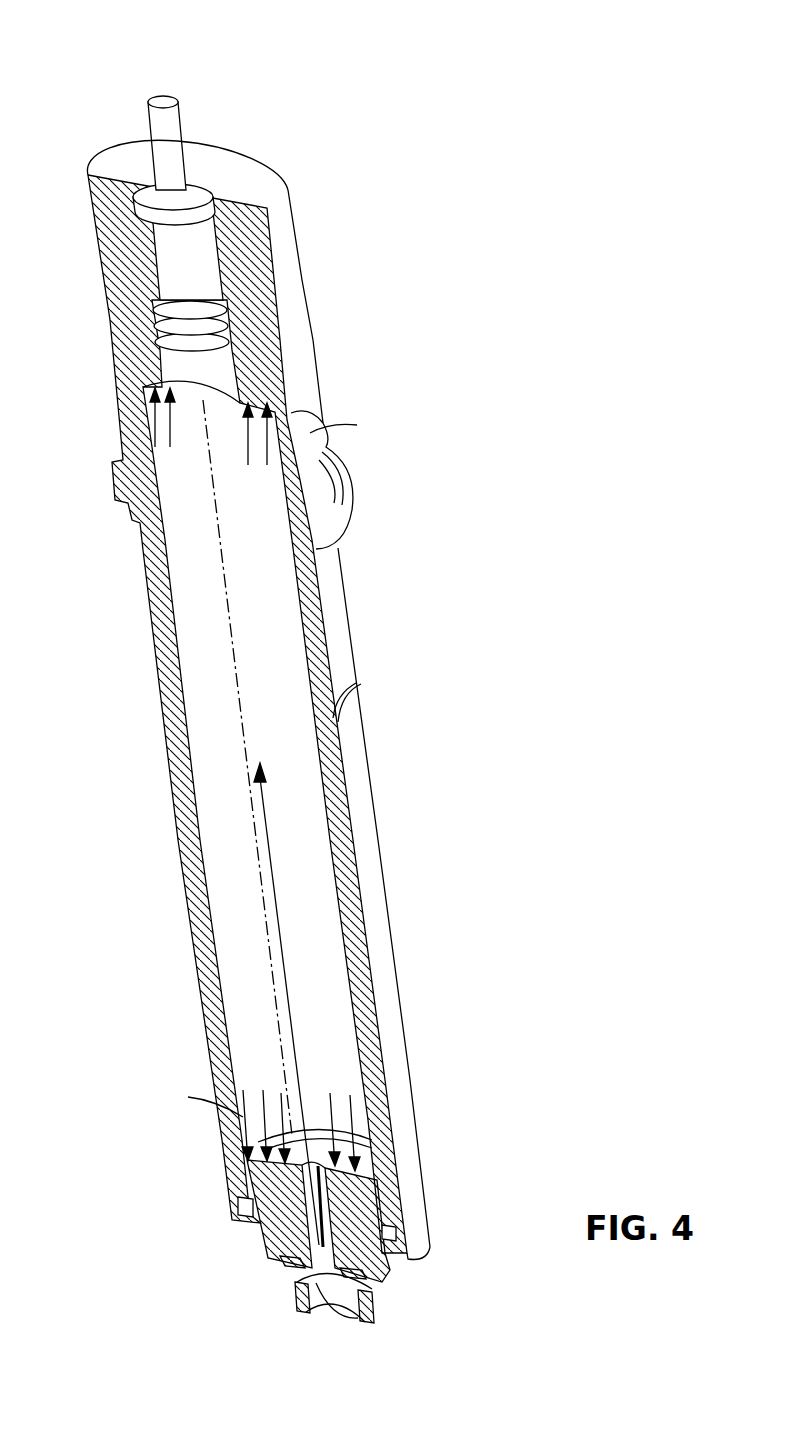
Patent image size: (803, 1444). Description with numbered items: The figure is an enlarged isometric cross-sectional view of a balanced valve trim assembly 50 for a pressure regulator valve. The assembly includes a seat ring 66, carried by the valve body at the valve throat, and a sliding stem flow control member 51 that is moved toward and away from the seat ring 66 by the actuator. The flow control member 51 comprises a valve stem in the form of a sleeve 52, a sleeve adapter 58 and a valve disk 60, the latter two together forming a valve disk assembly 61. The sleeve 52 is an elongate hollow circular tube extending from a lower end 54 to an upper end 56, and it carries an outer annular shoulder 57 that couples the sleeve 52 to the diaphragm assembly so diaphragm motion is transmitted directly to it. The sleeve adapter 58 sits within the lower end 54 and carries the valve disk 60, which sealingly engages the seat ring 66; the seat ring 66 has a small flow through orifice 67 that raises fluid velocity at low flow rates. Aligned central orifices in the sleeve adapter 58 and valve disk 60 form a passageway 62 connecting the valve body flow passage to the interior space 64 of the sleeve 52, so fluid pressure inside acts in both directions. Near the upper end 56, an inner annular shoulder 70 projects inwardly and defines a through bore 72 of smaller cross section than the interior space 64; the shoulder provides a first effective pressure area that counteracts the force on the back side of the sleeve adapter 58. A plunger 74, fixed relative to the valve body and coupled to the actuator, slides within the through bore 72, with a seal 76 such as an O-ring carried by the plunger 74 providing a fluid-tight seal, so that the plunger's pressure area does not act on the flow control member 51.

The valve trim assembly 50 is at (292, 35).
The sliding stem flow control member 51 is at (185, 970).
The sleeve 52 is at (372, 863).
The lower end 54 is at (418, 1232).
The upper end 56 is at (262, 165).
The outer annular shoulder 57 is at (342, 498).
The sleeve adapter 58 is at (392, 1274).
The valve disk 60 is at (315, 1287).
The valve disk assembly 61 is at (252, 1253).
The passageway 62 is at (335, 1207).
The interior space 64 is at (292, 722).
The seat ring 66 is at (370, 1320).
The flow through orifice 67 is at (340, 1307).
The inner annular shoulder 70 is at (262, 393).
The through bore 72 is at (203, 368).
The plunger 74 is at (193, 245).
The seal 76 is at (222, 330).